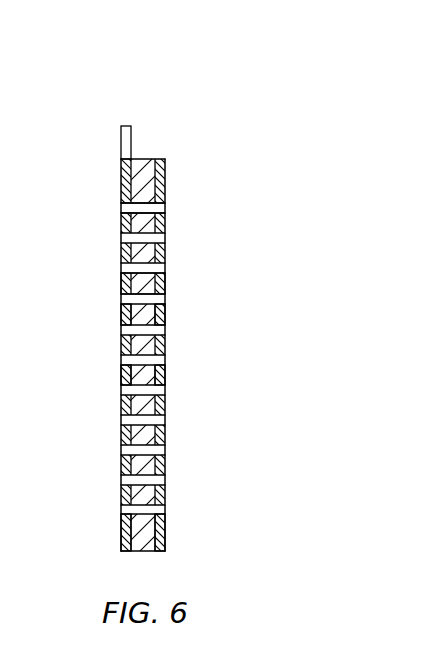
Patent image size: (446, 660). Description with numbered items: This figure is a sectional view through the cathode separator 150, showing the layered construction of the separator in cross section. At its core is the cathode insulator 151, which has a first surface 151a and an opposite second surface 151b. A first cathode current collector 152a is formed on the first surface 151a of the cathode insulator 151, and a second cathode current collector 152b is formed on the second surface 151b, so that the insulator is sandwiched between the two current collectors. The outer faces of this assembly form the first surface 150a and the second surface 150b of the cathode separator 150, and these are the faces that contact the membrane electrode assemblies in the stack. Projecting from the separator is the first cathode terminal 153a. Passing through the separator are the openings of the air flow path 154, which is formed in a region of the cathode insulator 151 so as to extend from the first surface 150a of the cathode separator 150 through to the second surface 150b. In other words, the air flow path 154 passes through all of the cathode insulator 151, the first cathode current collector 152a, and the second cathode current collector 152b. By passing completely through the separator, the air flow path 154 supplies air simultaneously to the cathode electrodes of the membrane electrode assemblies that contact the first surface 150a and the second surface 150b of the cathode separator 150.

The cathode separator 150 is at (204, 93).
The first surface of the cathode separator 150a is at (122, 508).
The second surface of the cathode separator 150b is at (165, 508).
The cathode insulator 151 is at (164, 283).
The first surface of the cathode insulator 151a is at (128, 373).
The second surface of the cathode insulator 151b is at (160, 373).
The first cathode current collector 152a is at (128, 318).
The second cathode current collector 152b is at (160, 315).
The first cathode terminal 153a is at (127, 145).
The air flow path 154 is at (160, 208).